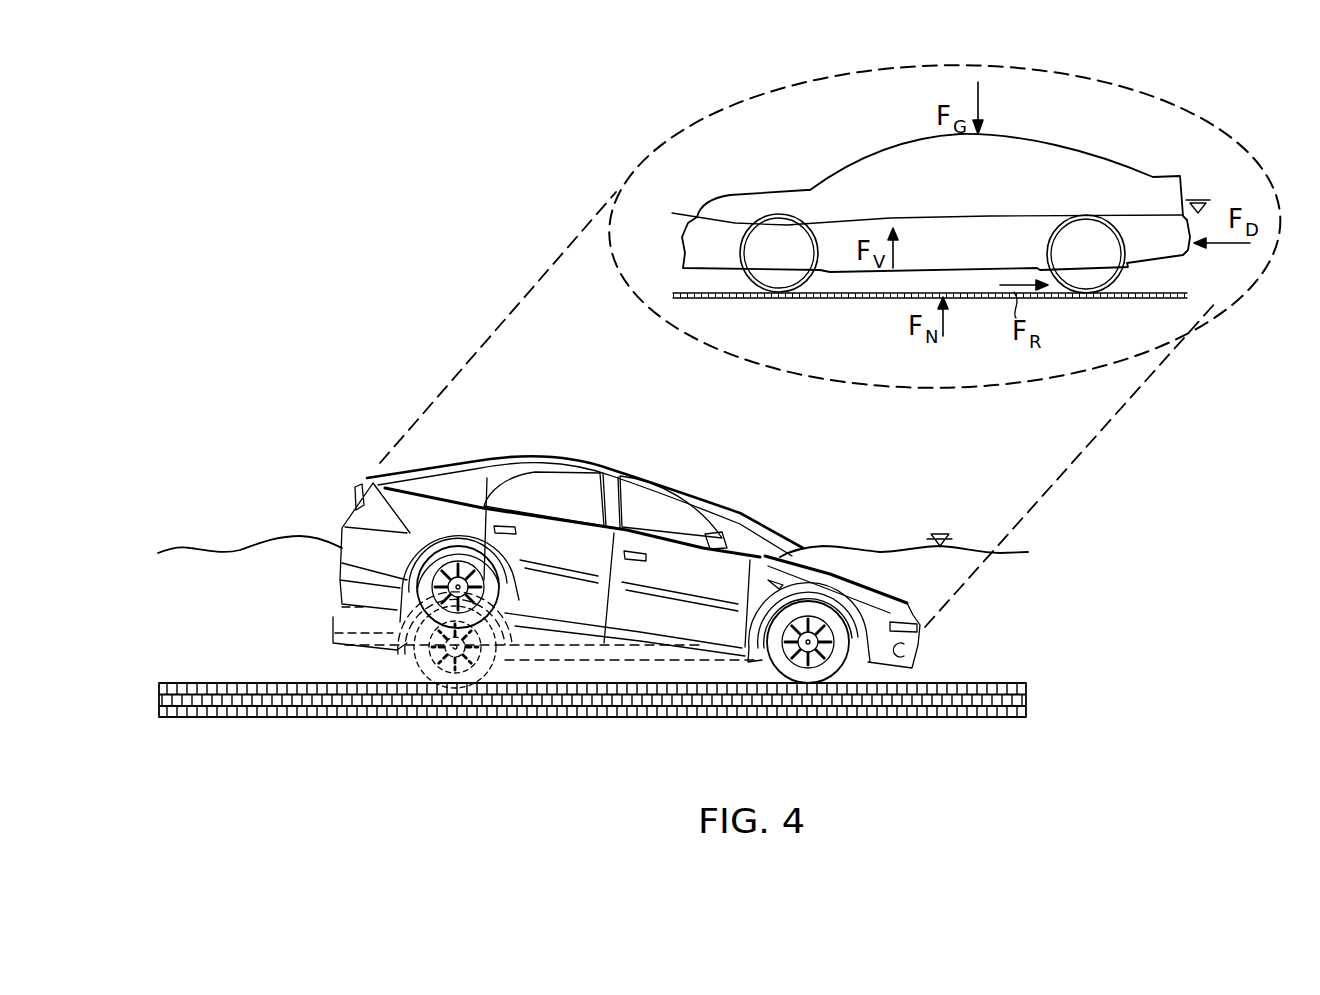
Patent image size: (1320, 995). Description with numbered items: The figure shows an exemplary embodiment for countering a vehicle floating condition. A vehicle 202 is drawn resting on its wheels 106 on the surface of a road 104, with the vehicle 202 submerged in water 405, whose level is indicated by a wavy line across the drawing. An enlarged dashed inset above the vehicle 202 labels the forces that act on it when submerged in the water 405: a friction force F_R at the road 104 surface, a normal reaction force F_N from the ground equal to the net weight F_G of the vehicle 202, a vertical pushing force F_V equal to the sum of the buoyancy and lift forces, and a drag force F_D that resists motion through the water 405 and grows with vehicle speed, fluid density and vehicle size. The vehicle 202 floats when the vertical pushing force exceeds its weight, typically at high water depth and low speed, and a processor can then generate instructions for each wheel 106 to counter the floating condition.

The road 104 is at (1027, 695).
The wheels 106 is at (457, 628).
The vehicle 202 is at (611, 463).
The water 405 is at (183, 548).